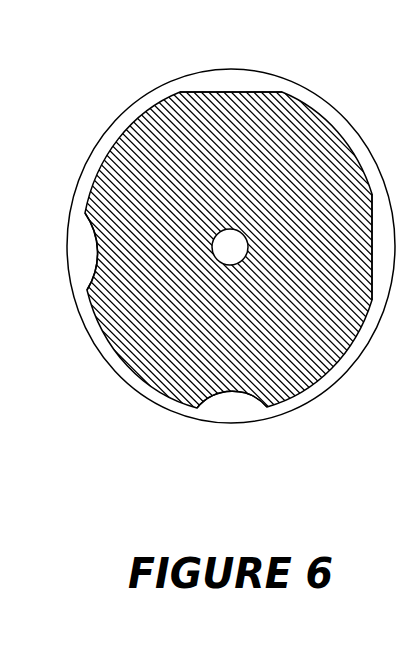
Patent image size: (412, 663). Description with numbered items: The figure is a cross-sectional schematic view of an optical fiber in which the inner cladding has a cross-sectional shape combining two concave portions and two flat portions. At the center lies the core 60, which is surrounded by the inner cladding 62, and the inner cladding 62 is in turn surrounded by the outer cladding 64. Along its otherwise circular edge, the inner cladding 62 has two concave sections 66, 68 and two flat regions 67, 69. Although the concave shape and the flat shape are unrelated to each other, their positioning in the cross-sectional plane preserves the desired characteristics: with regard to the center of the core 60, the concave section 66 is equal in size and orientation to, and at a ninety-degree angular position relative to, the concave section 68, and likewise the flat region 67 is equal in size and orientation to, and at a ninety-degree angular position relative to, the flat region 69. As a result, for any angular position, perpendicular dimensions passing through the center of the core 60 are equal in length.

The core 60 is at (230, 245).
The inner cladding 62 is at (140, 138).
The outer cladding 64 is at (119, 367).
The concave section 66 is at (250, 390).
The flat region 67 is at (253, 92).
The concave section 68 is at (92, 270).
The flat region 69 is at (372, 292).